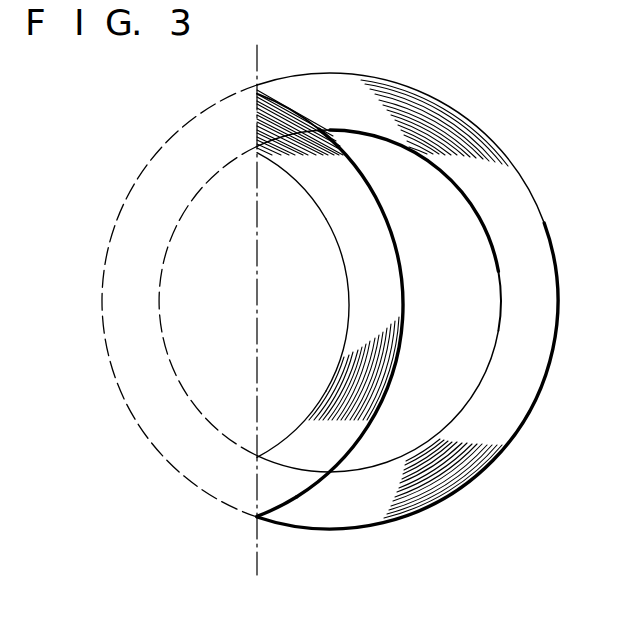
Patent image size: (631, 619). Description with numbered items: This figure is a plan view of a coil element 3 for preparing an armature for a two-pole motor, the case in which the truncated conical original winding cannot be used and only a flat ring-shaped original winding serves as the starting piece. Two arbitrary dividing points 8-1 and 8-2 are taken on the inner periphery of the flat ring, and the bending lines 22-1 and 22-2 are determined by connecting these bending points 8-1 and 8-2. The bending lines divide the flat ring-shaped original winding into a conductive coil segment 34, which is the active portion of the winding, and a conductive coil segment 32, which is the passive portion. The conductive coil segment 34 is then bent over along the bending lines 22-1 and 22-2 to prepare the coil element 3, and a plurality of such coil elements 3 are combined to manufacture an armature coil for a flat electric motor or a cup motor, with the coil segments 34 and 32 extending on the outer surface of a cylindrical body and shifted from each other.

The coil element 3 is at (355, 310).
The bending line 22-1 is at (257, 91).
The bending line 22-2 is at (258, 515).
The dividing point 8-1 is at (257, 150).
The dividing point 8-2 is at (258, 457).
The conductive coil segment 32 is at (538, 297).
The conductive coil segment 34 is at (384, 297).